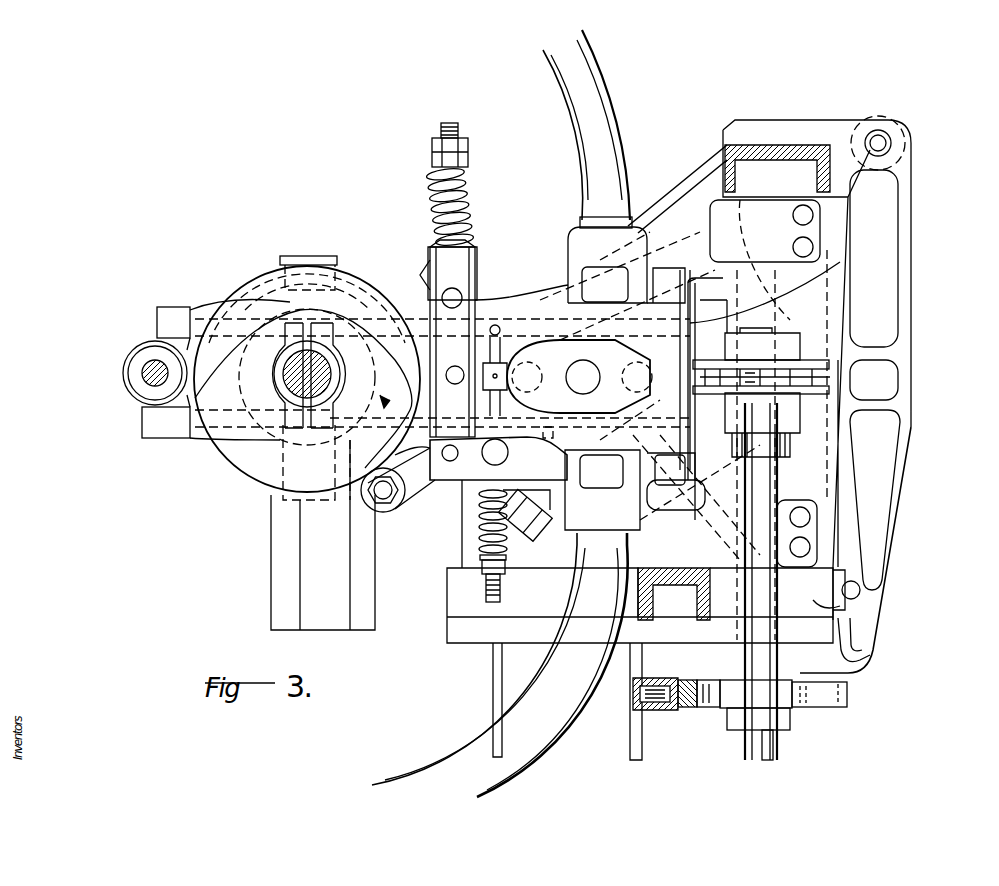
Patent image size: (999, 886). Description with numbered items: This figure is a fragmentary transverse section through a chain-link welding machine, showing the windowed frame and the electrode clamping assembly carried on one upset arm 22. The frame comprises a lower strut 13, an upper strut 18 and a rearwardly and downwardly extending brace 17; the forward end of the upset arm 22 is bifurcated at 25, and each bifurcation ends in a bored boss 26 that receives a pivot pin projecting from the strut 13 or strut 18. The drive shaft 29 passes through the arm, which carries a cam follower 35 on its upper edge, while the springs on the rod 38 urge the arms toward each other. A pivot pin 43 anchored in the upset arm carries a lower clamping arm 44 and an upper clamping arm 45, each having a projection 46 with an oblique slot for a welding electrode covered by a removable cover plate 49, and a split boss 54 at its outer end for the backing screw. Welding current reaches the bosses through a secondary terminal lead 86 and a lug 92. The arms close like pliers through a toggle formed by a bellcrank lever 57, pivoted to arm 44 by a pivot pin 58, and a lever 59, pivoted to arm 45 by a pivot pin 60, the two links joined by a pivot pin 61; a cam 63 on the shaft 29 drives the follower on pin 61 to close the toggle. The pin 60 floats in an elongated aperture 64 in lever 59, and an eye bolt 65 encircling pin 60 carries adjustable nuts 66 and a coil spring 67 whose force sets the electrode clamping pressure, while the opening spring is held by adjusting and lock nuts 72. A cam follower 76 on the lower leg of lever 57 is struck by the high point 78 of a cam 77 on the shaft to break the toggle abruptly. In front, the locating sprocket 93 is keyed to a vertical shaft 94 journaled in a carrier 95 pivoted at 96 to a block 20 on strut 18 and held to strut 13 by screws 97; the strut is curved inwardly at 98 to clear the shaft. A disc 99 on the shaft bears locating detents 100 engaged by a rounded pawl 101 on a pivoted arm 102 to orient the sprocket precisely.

The lower strut 13 is at (650, 612).
The brace 17 is at (680, 215).
The upper strut 18 is at (752, 150).
The block 20 is at (822, 128).
The upset arm 22 is at (426, 350).
The bifurcation 25 is at (710, 225).
The bored boss 26 is at (755, 220).
The drive shaft 29 is at (297, 360).
The cam follower 35 is at (330, 257).
The rod 38 is at (145, 381).
The pivot pin 43 is at (580, 370).
The lower clamping arm 44 is at (632, 447).
The upper clamping arm 45 is at (518, 305).
The projection 46 is at (670, 310).
The cover plate 49 is at (773, 330).
The split boss 54 is at (667, 517).
The bellcrank lever 57 is at (420, 487).
The pivot pin 58 is at (447, 485).
The lever 59 is at (468, 262).
The pivot pin 60 is at (460, 296).
The pivot pin 61 is at (447, 375).
The cam 63 is at (240, 450).
The elongated aperture 64 is at (423, 343).
The eye bolt 65 is at (456, 126).
The adjustable nuts 66 is at (468, 146).
The coil spring 67 is at (468, 197).
The adjusting and lock nuts 72 is at (503, 568).
The cam follower 76 is at (387, 513).
The cam 77 is at (272, 275).
The high point 78 is at (400, 453).
The secondary terminal lead 86 is at (612, 116).
The lug 92 is at (573, 518).
The locating sprocket 93 is at (827, 368).
The shaft 94 is at (837, 630).
The carrier 95 is at (903, 445).
The pivot 96 is at (885, 136).
The screws 97 is at (857, 585).
The inwardly curved portion 98 is at (863, 608).
The disc 99 is at (825, 708).
The locating detents 100 is at (710, 708).
The rounded pawl 101 is at (664, 708).
The arm 102 is at (633, 702).